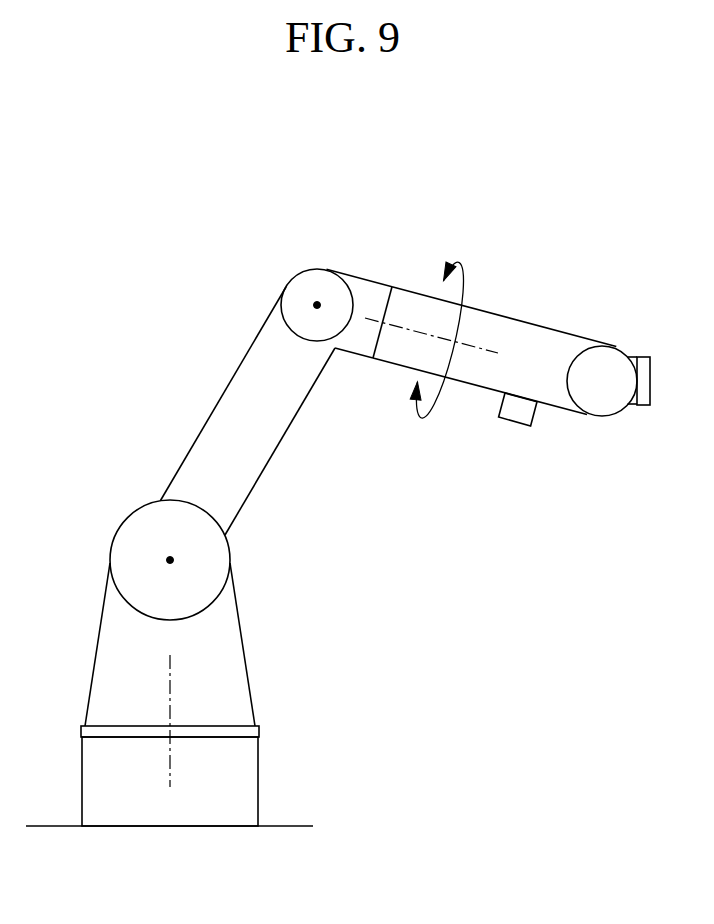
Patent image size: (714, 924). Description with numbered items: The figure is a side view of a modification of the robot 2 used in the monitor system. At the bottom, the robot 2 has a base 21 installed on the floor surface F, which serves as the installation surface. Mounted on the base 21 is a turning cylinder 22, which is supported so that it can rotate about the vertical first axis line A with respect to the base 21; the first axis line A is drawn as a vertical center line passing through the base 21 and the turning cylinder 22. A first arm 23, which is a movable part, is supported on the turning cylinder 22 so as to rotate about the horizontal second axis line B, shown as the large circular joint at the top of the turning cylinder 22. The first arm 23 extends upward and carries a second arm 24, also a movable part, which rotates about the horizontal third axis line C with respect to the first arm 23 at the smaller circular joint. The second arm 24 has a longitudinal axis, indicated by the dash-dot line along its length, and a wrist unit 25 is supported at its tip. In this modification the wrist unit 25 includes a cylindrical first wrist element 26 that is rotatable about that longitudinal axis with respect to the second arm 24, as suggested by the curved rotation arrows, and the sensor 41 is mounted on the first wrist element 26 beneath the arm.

The robot 2 is at (214, 333).
The base 21 is at (211, 810).
The turning cylinder 22 is at (235, 698).
The first arm 23 is at (258, 447).
The second arm 24 is at (370, 307).
The wrist unit 25 is at (645, 339).
The first wrist element 26 is at (527, 352).
The sensor 41 is at (535, 418).
The first axis line A is at (168, 768).
The second axis line B is at (170, 560).
The third axis line C is at (317, 305).
The floor surface F is at (283, 825).